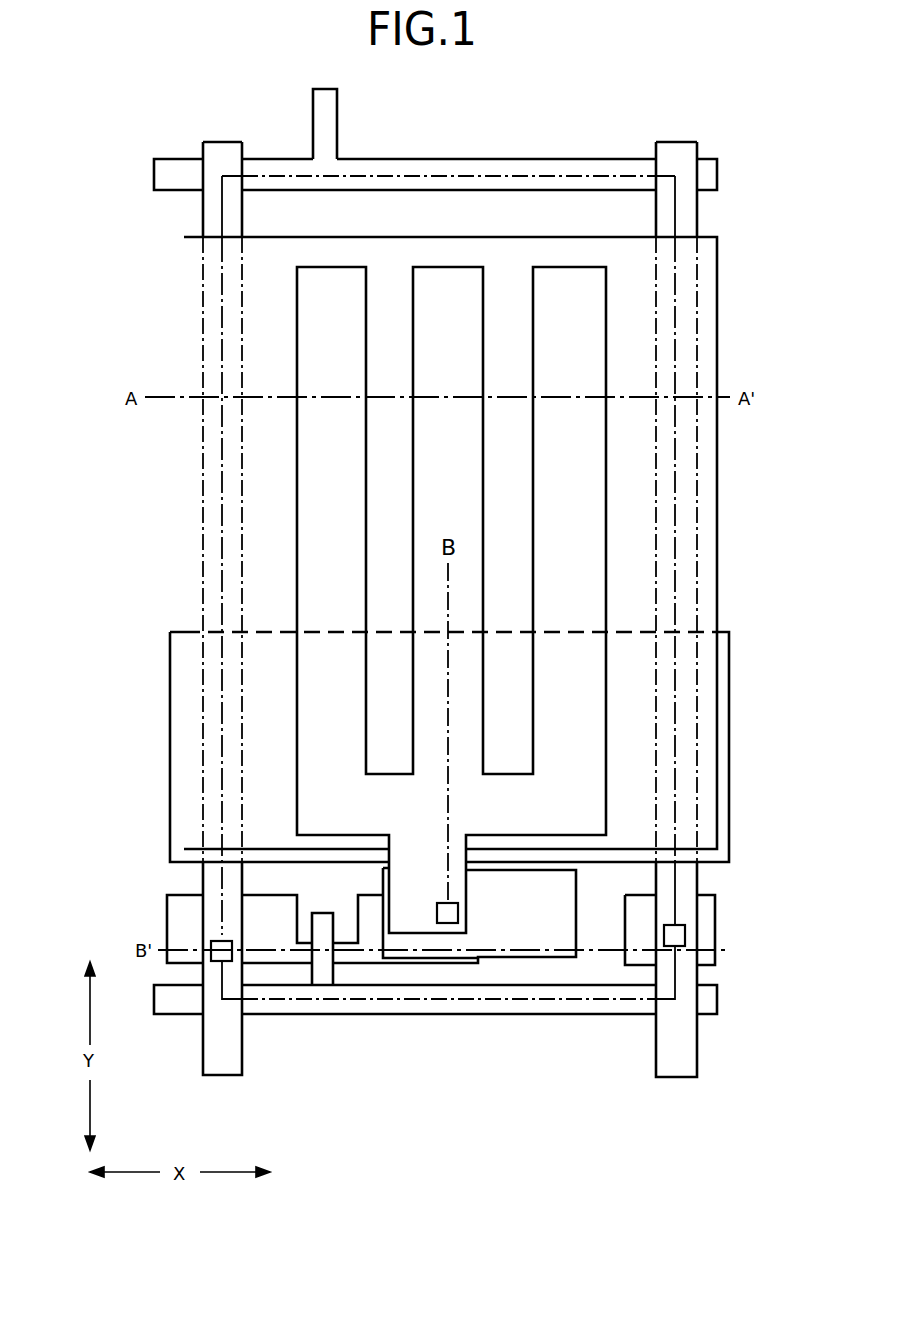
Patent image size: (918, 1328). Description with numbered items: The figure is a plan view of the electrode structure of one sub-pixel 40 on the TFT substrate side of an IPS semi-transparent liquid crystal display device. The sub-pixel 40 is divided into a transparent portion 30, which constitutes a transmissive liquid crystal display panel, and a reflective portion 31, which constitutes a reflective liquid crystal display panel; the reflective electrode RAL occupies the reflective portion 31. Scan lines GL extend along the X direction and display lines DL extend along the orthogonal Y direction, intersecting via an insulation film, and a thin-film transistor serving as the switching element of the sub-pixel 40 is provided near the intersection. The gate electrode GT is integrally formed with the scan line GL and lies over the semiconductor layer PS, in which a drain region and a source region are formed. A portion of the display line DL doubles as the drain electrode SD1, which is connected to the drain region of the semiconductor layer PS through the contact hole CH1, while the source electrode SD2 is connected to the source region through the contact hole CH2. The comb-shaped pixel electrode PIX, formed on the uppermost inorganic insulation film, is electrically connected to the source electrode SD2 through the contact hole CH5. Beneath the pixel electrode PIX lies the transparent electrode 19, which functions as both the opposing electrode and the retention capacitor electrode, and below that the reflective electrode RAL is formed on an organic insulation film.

The sub-pixel 40 is at (568, 173).
The display line DL is at (223, 1045).
The transparent electrode 19 is at (183, 600).
The reflective electrode RAL is at (170, 714).
The pixel electrode PIX is at (312, 552).
The source electrode SD2 is at (553, 940).
The drain electrode SD1 is at (360, 915).
The semiconductor layer PS is at (187, 965).
The gate electrode GT is at (322, 958).
The scan line GL is at (508, 1016).
The contact hole CH1 is at (212, 943).
The contact hole CH2 is at (450, 918).
The contact hole CH5 is at (674, 935).
The transparent portion 30 is at (769, 238).
The reflective portion 31 is at (769, 631).